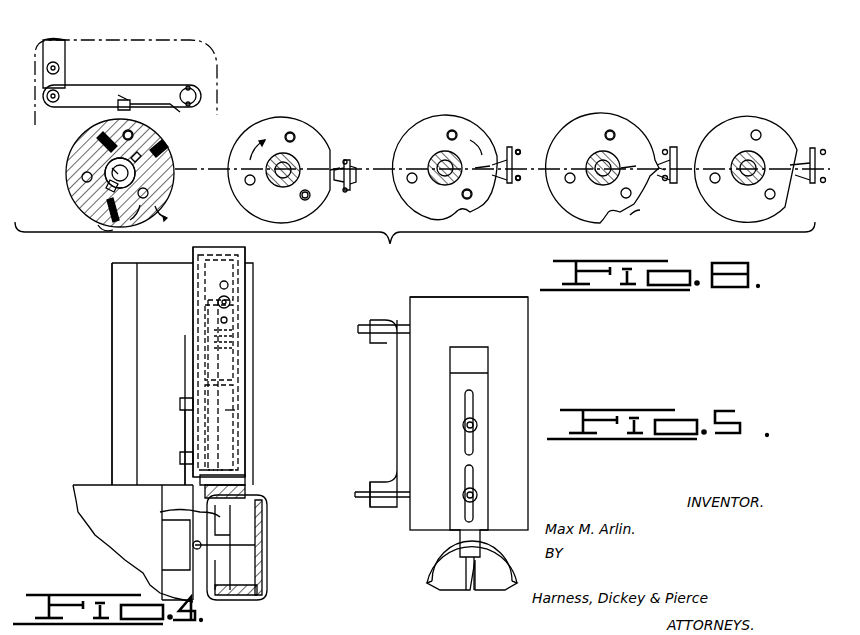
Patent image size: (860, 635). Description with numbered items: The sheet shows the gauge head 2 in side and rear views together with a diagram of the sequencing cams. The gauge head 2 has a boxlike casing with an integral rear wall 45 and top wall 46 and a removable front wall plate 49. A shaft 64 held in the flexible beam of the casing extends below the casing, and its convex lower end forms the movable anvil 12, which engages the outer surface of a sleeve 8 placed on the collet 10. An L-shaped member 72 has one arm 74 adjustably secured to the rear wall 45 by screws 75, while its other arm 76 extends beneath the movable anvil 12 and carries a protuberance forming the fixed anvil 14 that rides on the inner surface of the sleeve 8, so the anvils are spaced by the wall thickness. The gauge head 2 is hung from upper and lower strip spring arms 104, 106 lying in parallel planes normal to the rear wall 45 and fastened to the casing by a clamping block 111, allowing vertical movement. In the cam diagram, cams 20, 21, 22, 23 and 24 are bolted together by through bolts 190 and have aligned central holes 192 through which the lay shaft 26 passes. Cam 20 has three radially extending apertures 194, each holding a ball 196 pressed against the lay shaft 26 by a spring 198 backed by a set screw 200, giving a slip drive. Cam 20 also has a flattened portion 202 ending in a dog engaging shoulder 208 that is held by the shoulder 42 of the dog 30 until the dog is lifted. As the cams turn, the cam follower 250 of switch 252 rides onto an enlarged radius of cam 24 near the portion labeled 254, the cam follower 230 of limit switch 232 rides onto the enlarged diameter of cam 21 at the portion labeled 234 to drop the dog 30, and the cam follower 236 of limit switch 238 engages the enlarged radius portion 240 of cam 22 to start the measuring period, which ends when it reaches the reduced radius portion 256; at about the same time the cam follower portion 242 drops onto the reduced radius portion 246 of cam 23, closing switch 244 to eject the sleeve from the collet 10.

In FIG. 4, the gauge head 2 is at (262, 374).
In FIG. 5, the gauge head 2 is at (540, 389).
In FIG. 4, the sleeve 8 is at (263, 500).
In FIG. 5, the sleeve 8 is at (440, 556).
In FIG. 4, the collet 10 is at (268, 520).
In FIG. 5, the collet 10 is at (435, 574).
In FIG. 4, the movable anvil 12 is at (241, 472).
In FIG. 4, the fixed anvil 14 is at (245, 490).
In FIG. 6, the cam 20 is at (62, 168).
In FIG. 6, the cam 21 is at (302, 131).
In FIG. 6, the cam 22 is at (452, 115).
In FIG. 6, the cam 23 is at (623, 122).
In FIG. 6, the cam 24 is at (743, 116).
In FIG. 6, the lay shaft 26 is at (520, 168).
In FIG. 6, the dog 30 is at (93, 74).
In FIG. 6, the shoulder 42 is at (130, 105).
In FIG. 4, the rear wall 45 is at (190, 290).
In FIG. 5, the rear wall 45 is at (543, 335).
In FIG. 4, the top wall 46 is at (172, 248).
In FIG. 4, the front wall plate 49 is at (248, 252).
In FIG. 4, the shaft 64 is at (238, 436).
In FIG. 4, the L-shaped member 72 is at (186, 437).
In FIG. 5, the L-shaped member 72 is at (484, 432).
In FIG. 4, the arm 74 is at (186, 411).
In FIG. 5, the arm 74 is at (456, 460).
In FIG. 4, the screws 75 is at (182, 390).
In FIG. 5, the screws 75 is at (463, 425).
In FIG. 4, the arm 76 is at (160, 512).
In FIG. 5, the upper strip spring arm 104 is at (360, 326).
In FIG. 5, the lower strip spring arm 106 is at (357, 500).
In FIG. 5, the clamping block 111 is at (393, 432).
In FIG. 6, the through bolts 190 is at (118, 130).
In FIG. 6, the central holes 192 is at (140, 172).
In FIG. 6, the radially extending apertures 194 is at (140, 205).
In FIG. 6, the ball 196 is at (108, 175).
In FIG. 6, the spring 198 is at (107, 200).
In FIG. 6, the set screw 200 is at (98, 226).
In FIG. 6, the flattened portion 202 is at (148, 109).
In FIG. 6, the dog engaging shoulder 208 is at (120, 100).
In FIG. 6, the cam follower 230 is at (307, 197).
In FIG. 6, the limit switch 232 is at (347, 195).
In FIG. 6, the cam lobe 234 is at (332, 156).
In FIG. 6, the cam follower 236 is at (479, 170).
In FIG. 6, the limit switch 238 is at (520, 148).
In FIG. 6, the enlarged radius portion 240 is at (412, 212).
In FIG. 6, the cam follower portion 242 is at (623, 165).
In FIG. 6, the switch 244 is at (657, 164).
In FIG. 6, the reduced radius portion 246 is at (634, 202).
In FIG. 6, the cam follower 250 is at (802, 168).
In FIG. 6, the switch 252 is at (812, 147).
In FIG. 6, the switch 254 is at (789, 200).
In FIG. 6, the reduced radius portion 256 is at (476, 135).